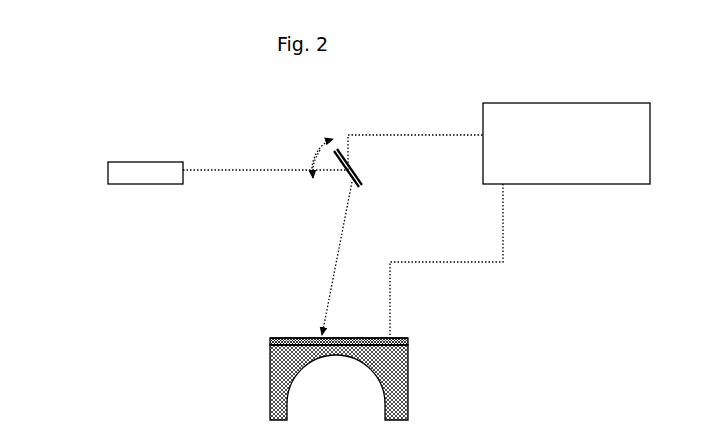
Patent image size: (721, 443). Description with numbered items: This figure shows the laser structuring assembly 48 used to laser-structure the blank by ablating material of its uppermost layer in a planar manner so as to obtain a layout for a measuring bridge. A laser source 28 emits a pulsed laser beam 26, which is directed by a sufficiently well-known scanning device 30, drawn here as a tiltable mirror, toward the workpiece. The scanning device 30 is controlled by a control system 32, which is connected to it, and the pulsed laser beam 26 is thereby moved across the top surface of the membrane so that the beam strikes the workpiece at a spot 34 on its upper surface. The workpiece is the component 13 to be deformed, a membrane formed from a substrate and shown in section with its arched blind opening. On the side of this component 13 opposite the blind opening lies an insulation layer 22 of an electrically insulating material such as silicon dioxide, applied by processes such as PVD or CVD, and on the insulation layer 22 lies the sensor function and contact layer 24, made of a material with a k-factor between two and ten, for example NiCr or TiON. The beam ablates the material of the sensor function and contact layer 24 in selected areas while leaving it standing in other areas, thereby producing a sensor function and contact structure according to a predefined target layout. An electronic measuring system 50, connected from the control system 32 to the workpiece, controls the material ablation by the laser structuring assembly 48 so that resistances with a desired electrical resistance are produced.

The laser structuring assembly 48 is at (125, 85).
The laser source 28 is at (130, 168).
The scanning device 30 is at (380, 191).
The control system 32 is at (528, 118).
The pulsed laser beam 26 is at (337, 228).
The electronic measuring system 50 is at (516, 229).
The measurement spot 34 is at (282, 335).
The sensor function and contact layer 24 is at (389, 337).
The insulation layer 22 is at (408, 344).
The component to be deformed 13 is at (408, 378).